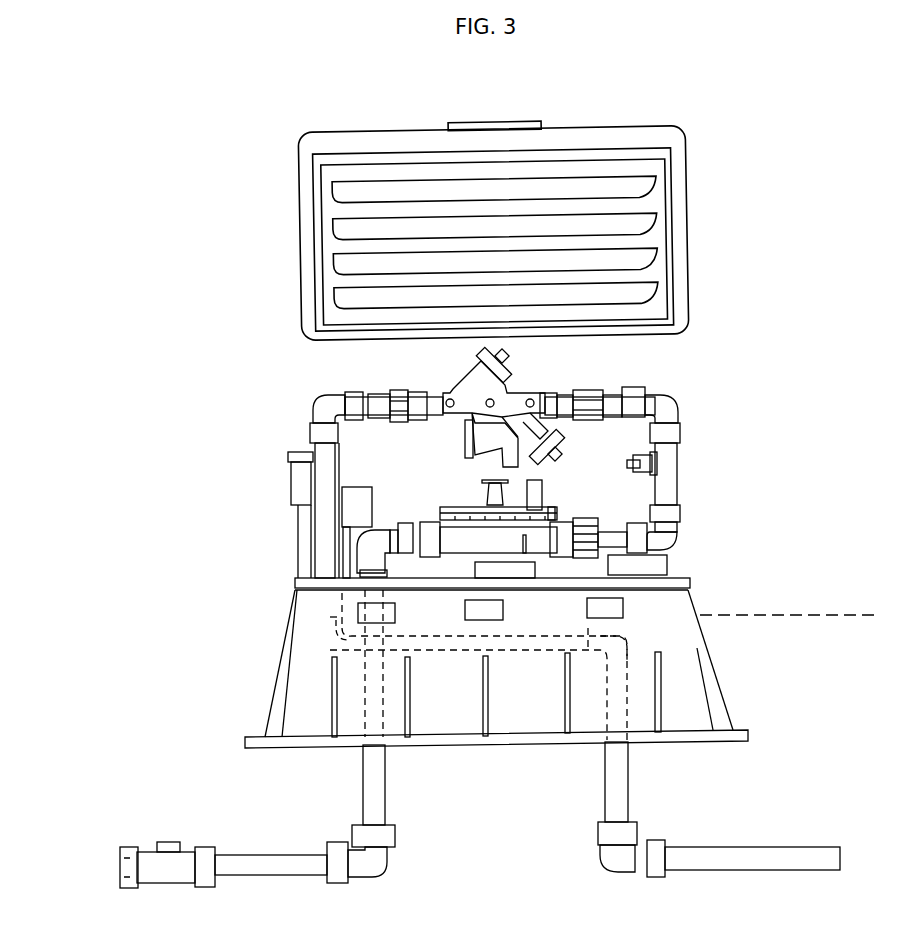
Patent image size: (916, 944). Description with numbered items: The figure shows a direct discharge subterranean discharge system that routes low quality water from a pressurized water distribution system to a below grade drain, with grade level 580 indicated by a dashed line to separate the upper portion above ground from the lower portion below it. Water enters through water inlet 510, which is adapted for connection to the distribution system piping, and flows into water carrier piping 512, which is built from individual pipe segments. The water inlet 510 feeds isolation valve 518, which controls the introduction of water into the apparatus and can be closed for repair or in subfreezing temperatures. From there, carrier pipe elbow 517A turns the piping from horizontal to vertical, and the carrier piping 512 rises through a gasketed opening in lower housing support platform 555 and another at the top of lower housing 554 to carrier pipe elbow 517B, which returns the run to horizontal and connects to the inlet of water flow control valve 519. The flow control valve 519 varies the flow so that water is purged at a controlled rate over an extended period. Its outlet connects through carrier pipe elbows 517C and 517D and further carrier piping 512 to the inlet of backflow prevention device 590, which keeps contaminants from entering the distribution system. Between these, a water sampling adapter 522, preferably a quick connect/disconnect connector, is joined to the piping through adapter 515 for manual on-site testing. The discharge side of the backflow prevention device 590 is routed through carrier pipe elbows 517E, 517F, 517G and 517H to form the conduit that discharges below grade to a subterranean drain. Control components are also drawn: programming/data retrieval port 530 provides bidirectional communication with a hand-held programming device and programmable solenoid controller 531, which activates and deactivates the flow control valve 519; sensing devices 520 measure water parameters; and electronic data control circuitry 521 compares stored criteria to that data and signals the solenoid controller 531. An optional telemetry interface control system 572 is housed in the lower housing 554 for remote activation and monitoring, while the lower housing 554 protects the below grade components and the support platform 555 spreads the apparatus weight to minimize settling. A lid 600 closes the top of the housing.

The lid 600 is at (695, 193).
The backflow prevention device 590 is at (513, 390).
The carrier pipe elbow 517E is at (315, 407).
The carrier pipe elbow 517D is at (672, 400).
The carrier pipe elbow 517C is at (677, 532).
The carrier pipe elbow 517B is at (368, 529).
The carrier pipe elbow 517A is at (402, 857).
The carrier pipe elbow 517F is at (327, 648).
The carrier pipe elbow 517G is at (620, 645).
The carrier pipe elbow 517H is at (612, 866).
The water carrier piping 512 is at (676, 474).
The adapter 515 is at (657, 457).
The isolation valve 518 is at (155, 837).
The water flow control valve 519 is at (435, 503).
The sensing devices 520 is at (357, 487).
The electronic data control circuitry 521 is at (672, 562).
The water sampling adapter 522 is at (622, 465).
The programming/data retrieval port 530 is at (297, 443).
The programmable solenoid controller 531 is at (547, 497).
The lower housing 554 is at (278, 642).
The lower housing support platform 555 is at (238, 735).
The telephone and/or radio telemetry interface control system 572 is at (492, 575).
The grade level 580 is at (832, 607).
The water inlet 510 is at (113, 867).